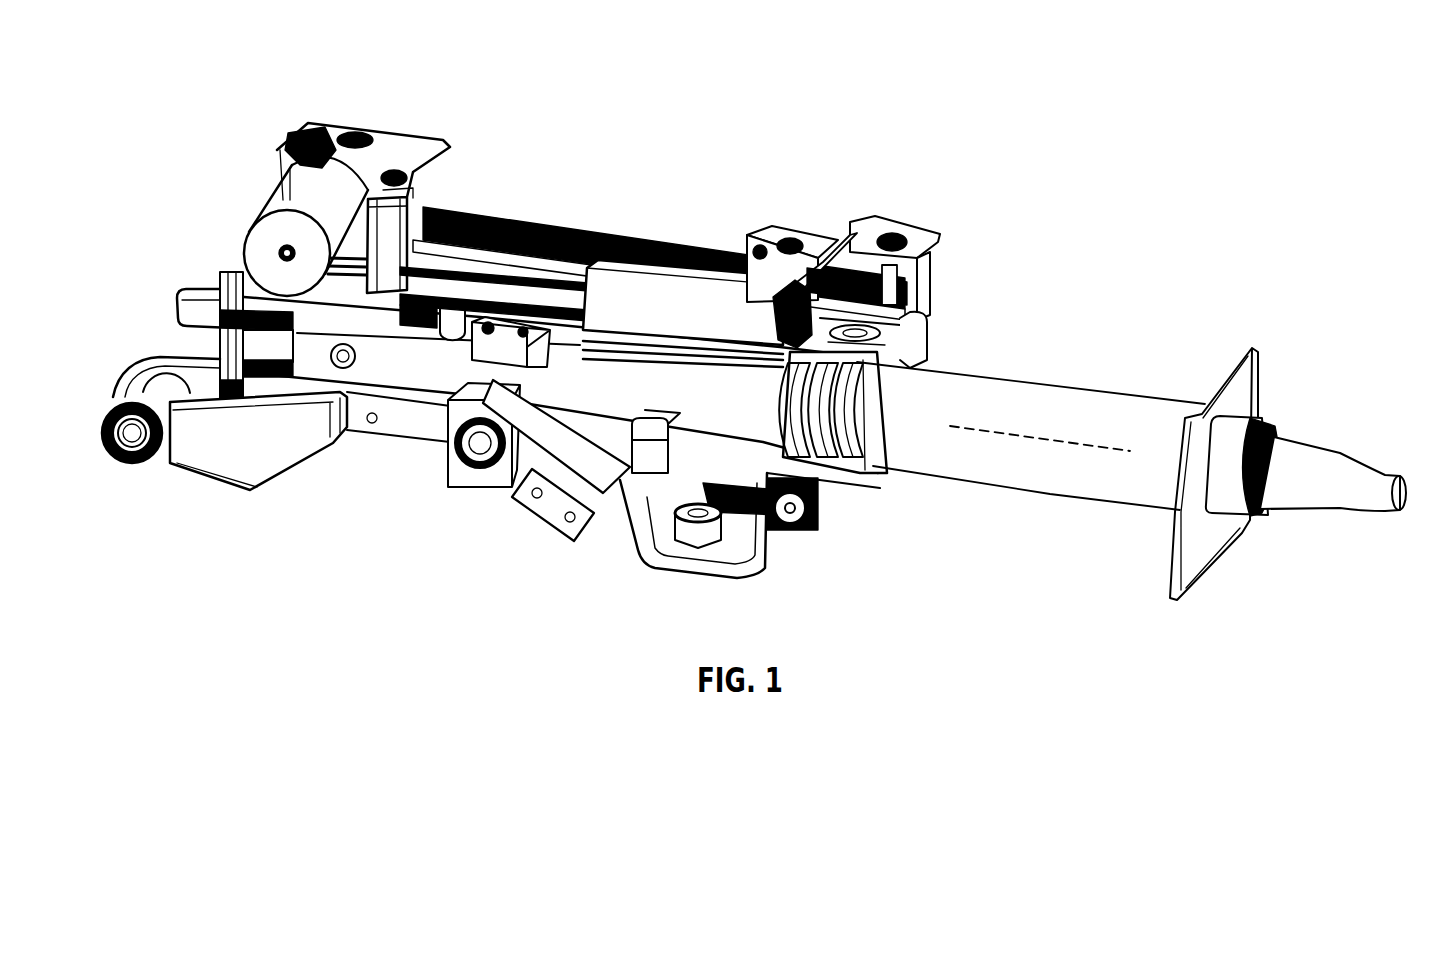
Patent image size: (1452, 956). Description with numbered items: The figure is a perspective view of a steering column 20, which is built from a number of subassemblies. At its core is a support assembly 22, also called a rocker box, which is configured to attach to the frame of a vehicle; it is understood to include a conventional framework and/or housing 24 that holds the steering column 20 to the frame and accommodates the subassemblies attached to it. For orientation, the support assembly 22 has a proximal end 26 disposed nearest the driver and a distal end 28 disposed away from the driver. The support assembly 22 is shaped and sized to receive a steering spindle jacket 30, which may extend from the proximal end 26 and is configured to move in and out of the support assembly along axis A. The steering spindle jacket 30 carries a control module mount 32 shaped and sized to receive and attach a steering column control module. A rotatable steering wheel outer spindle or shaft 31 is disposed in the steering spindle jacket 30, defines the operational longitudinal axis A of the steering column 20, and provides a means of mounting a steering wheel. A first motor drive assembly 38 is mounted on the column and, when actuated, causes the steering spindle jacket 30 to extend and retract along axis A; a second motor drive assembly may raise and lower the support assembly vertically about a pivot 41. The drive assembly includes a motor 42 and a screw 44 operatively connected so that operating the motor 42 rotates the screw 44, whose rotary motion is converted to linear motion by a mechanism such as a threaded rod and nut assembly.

The steering column 20 is at (982, 226).
The support assembly 22 is at (760, 416).
The housing 24 is at (910, 330).
The proximal end 26 is at (880, 494).
The distal end 28 is at (227, 184).
The steering spindle jacket 30 is at (1047, 405).
The steering wheel outer spindle 31 is at (1283, 490).
The control module mount 32 is at (1243, 358).
The first motor drive assembly 38 is at (467, 182).
The pivot 41 is at (133, 463).
The motor 42 is at (292, 183).
The screw 44 is at (623, 230).
The axis A is at (1072, 445).